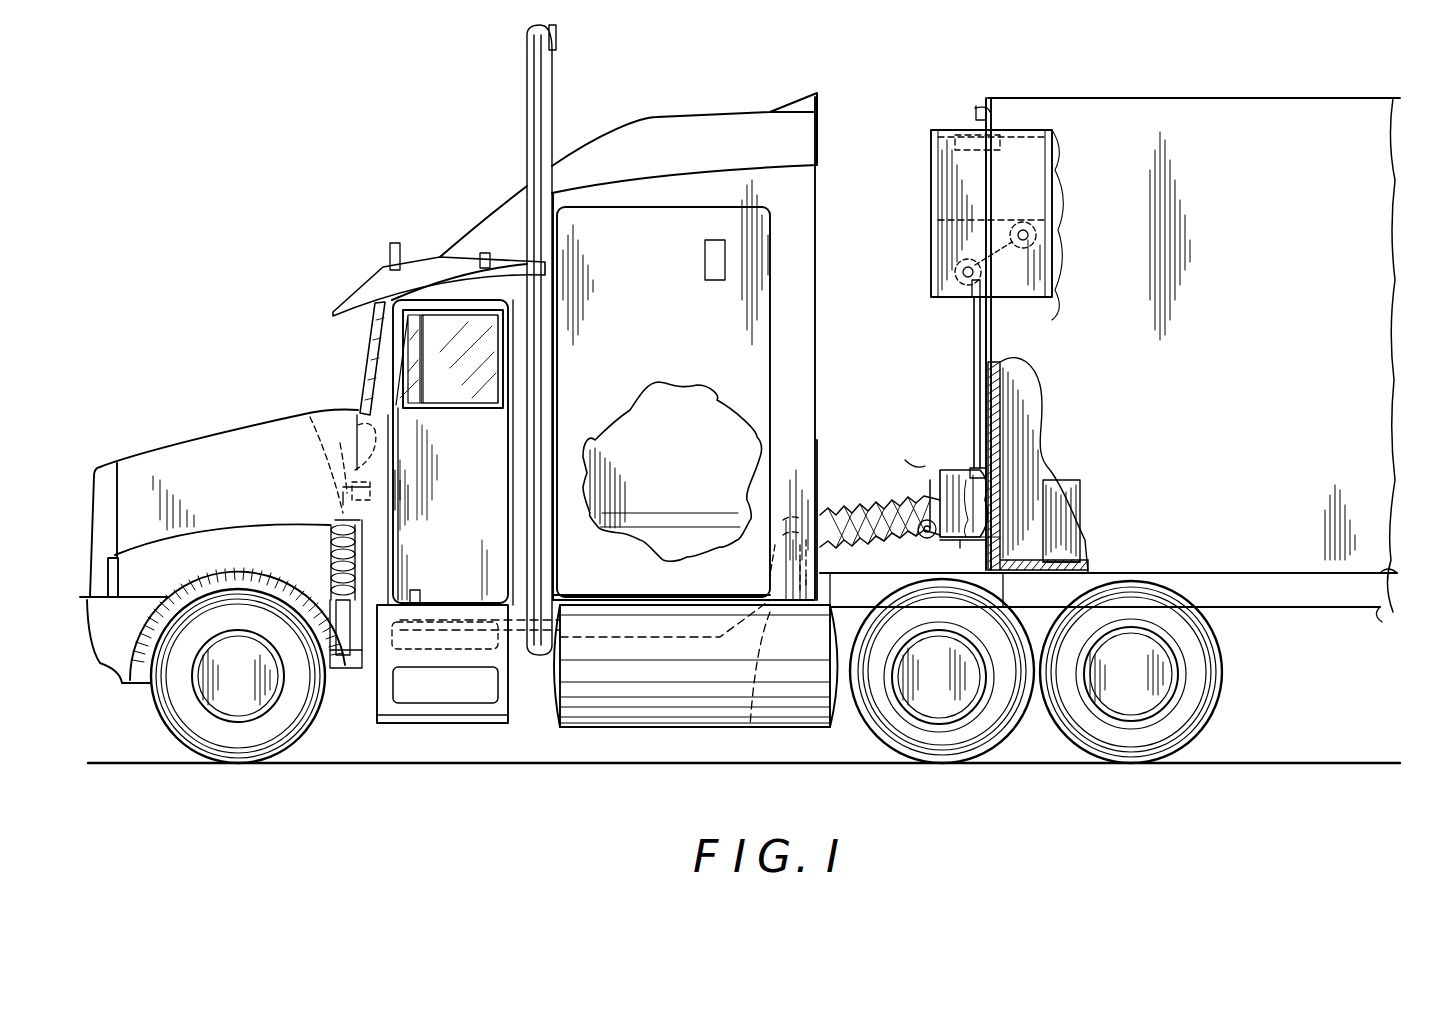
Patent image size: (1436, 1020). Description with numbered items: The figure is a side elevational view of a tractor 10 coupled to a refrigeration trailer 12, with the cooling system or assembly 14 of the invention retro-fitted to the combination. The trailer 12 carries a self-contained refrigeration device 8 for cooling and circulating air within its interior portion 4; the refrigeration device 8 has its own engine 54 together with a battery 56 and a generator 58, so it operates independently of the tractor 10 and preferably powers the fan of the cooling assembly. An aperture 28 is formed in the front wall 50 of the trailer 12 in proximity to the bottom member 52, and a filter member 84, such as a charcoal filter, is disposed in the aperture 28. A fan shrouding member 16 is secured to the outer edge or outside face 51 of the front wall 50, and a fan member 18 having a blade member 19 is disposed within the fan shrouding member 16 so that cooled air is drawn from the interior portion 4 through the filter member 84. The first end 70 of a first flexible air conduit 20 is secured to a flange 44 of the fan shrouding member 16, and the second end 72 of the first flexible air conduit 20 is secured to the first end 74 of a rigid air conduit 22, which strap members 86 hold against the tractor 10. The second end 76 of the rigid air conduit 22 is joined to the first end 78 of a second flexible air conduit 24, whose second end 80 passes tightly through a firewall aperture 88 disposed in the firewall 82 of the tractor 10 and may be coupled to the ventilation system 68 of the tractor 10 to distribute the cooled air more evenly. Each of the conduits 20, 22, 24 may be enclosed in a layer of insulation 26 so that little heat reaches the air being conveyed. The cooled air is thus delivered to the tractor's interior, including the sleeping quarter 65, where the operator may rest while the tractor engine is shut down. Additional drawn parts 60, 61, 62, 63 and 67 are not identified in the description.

The interior portion of the refer trailer 4 is at (1027, 407).
The refrigeration device 8 is at (930, 178).
The tractor 10 is at (433, 240).
The refrigeration trailer 12 is at (1163, 97).
The cooling system or assembly 14 is at (841, 663).
The fan shrouding member 16 is at (953, 540).
The fan member 18 is at (955, 493).
The blade member 19 is at (962, 560).
The first flexible air conduit 20 is at (822, 545).
The rigid air conduit 22 is at (542, 657).
The second flexible air conduit 24 is at (347, 585).
The layer of insulation 26 is at (753, 730).
The aperture 28 is at (1027, 560).
The flange 44 is at (832, 566).
The front wall 50 is at (990, 112).
The outer edge of the front wall 51 is at (983, 117).
The bottom member 52 is at (1055, 490).
The engine 54 is at (952, 257).
The battery 56 is at (1023, 293).
The generator 58 is at (1010, 232).
The rod end 60 is at (975, 355).
The knob 61 is at (925, 518).
The pin 62 is at (937, 493).
The rod 63 is at (977, 325).
The sleeping quarter 65 is at (668, 430).
The door window 67 is at (463, 357).
The ventilation system 68 is at (407, 497).
The first end of the first flexible air conduit 70 is at (918, 460).
The second end of the first flexible air conduit 72 is at (840, 515).
The first end of the rigid air conduit 74 is at (820, 517).
The second end of the rigid air conduit 76 is at (415, 595).
The first end of the second flexible air conduit 78 is at (357, 667).
The second end of the second flexible air conduit 80 is at (343, 487).
The firewall 82 is at (340, 443).
The filter member 84 is at (1000, 482).
The strap member 86 is at (447, 647).
The firewall aperture 88 is at (310, 417).